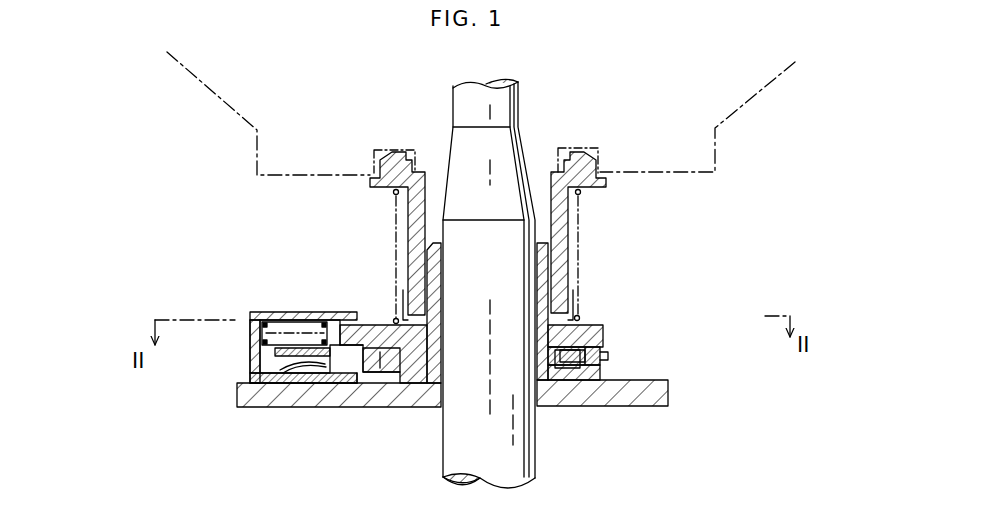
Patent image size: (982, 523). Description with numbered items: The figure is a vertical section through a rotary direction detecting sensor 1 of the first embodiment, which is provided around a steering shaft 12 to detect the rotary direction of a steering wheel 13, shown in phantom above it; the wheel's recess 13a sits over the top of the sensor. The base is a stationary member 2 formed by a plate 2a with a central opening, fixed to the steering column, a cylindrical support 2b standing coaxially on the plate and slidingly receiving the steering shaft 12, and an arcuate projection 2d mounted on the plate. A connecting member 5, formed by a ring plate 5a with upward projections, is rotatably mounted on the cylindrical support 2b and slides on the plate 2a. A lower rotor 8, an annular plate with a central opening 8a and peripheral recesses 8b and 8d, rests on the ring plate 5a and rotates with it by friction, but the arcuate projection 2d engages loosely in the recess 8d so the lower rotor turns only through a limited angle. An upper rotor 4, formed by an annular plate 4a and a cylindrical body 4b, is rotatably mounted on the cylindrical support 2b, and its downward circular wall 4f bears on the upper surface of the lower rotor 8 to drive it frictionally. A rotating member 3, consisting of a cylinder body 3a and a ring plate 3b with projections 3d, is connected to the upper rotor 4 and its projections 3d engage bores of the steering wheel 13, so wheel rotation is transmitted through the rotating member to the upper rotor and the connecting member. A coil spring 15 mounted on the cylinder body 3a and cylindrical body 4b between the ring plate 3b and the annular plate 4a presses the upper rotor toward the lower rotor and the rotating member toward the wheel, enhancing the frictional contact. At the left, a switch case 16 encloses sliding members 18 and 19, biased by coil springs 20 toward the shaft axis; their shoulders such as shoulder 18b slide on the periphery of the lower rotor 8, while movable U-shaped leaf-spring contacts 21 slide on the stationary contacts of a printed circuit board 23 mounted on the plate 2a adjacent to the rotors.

The rotary direction detecting sensor 1 is at (680, 253).
The stationary member 2 is at (668, 415).
The plate 2a is at (676, 400).
The cylindrical support 2b is at (570, 283).
The arcuate projection 2d is at (660, 372).
The rotating member 3 is at (410, 216).
The cylinder body 3a is at (408, 247).
The ring plate 3b is at (604, 187).
The projections 3d is at (596, 160).
The upper rotor 4 is at (727, 306).
The annular plate 4a is at (606, 336).
The cylindrical body 4b is at (580, 316).
The circular wall 4f is at (590, 383).
The connecting member 5 is at (553, 383).
The ring plate 5a is at (392, 390).
The lower rotor 8 is at (396, 395).
The central opening 8a is at (393, 318).
The recess 8b is at (362, 394).
The recess 8d is at (606, 358).
The steering shaft 12 is at (540, 476).
The steering wheel 13 is at (720, 132).
The body recess 13a is at (567, 150).
The coil spring 15 is at (580, 198).
The switch case 16 is at (262, 312).
The sliding member 18 is at (296, 310).
The sliding member 19 is at (300, 346).
The shoulder 18b is at (332, 410).
The coil springs 20 is at (262, 325).
The movable contact 21 is at (282, 407).
The printed circuit board 23 is at (255, 378).